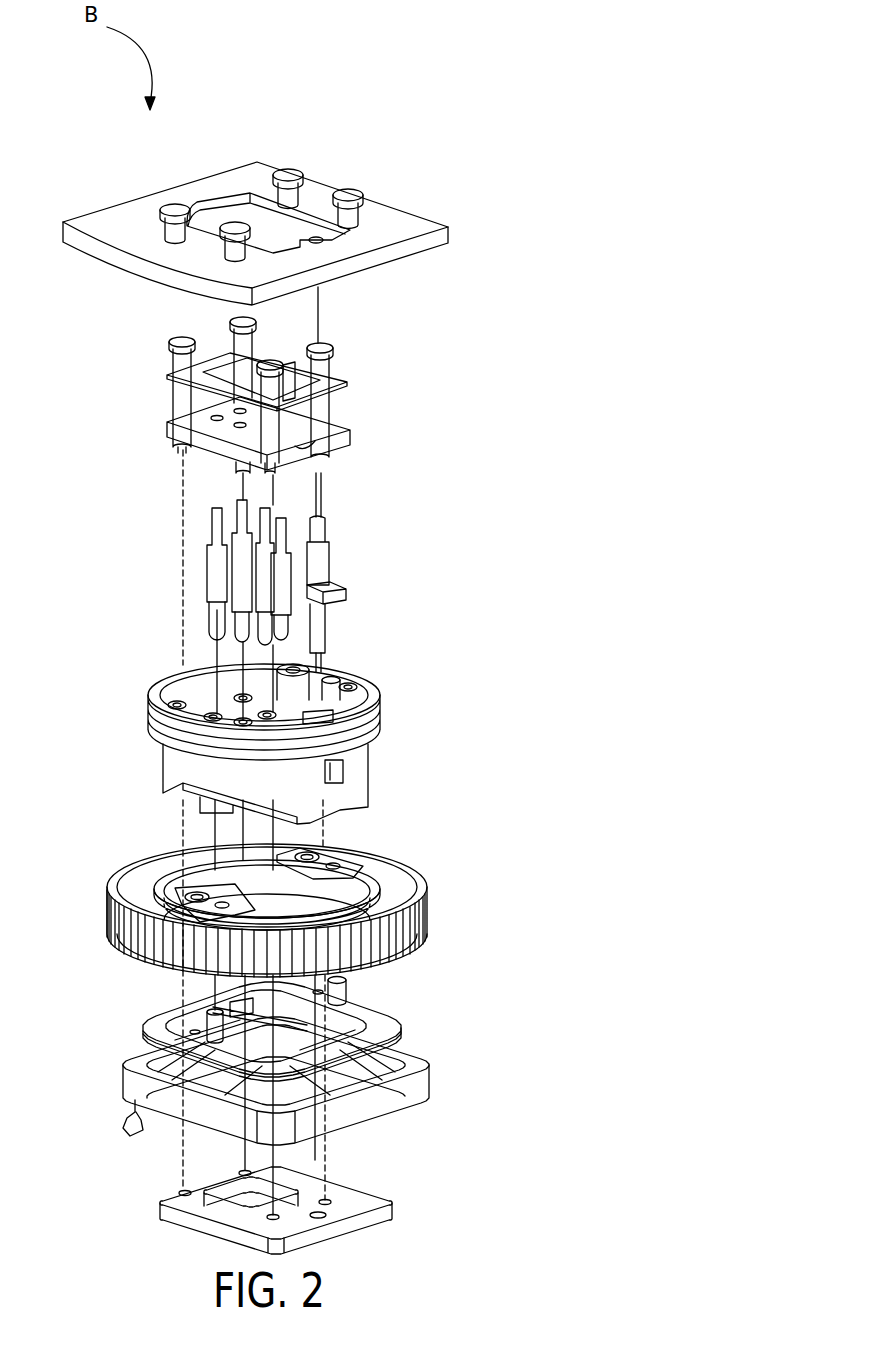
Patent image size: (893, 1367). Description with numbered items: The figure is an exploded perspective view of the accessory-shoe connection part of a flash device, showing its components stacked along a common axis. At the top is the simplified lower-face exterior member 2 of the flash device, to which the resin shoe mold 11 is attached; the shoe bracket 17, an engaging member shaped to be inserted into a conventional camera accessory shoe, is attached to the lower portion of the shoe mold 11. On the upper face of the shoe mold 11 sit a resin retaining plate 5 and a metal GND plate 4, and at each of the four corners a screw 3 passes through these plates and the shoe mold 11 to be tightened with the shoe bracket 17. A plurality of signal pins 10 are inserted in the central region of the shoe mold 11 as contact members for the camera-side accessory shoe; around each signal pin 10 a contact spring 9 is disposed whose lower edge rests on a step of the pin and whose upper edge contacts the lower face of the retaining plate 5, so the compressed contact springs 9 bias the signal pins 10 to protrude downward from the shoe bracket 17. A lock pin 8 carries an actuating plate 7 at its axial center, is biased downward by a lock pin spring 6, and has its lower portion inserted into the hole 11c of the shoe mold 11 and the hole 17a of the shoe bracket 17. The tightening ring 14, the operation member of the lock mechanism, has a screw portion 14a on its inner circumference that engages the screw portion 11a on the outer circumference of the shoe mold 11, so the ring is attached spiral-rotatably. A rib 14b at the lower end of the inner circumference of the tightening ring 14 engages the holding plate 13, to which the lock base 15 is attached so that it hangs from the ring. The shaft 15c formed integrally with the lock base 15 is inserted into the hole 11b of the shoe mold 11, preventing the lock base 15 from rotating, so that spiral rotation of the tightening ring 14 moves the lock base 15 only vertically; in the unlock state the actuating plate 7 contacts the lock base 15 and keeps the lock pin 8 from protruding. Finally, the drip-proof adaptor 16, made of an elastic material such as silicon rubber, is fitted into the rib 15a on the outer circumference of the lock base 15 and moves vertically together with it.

The lower-face exterior member 2 is at (417, 222).
The screw 3 is at (257, 320).
The GND plate 4 is at (343, 385).
The retaining plate 5 is at (340, 427).
The lock pin spring 6 is at (402, 568).
The actuating plate 7 is at (347, 588).
The lock pin 8 is at (327, 645).
The contact spring 9 is at (168, 578).
The signal pin 10 is at (220, 615).
The shoe mold 11 is at (298, 738).
The screw portion 11a is at (380, 715).
The hole 11b is at (347, 677).
The hole 11c is at (372, 695).
The holding plate 13 is at (167, 880).
The tightening ring 14 is at (296, 874).
The screw portion 14a is at (202, 863).
The rib 14b is at (407, 953).
The lock base 15 is at (305, 1027).
The rib 15a is at (408, 1030).
The shaft 15c is at (205, 995).
The drip-proof adaptor 16 is at (403, 1088).
The shoe bracket 17 is at (347, 1218).
The hole 17a is at (333, 1215).